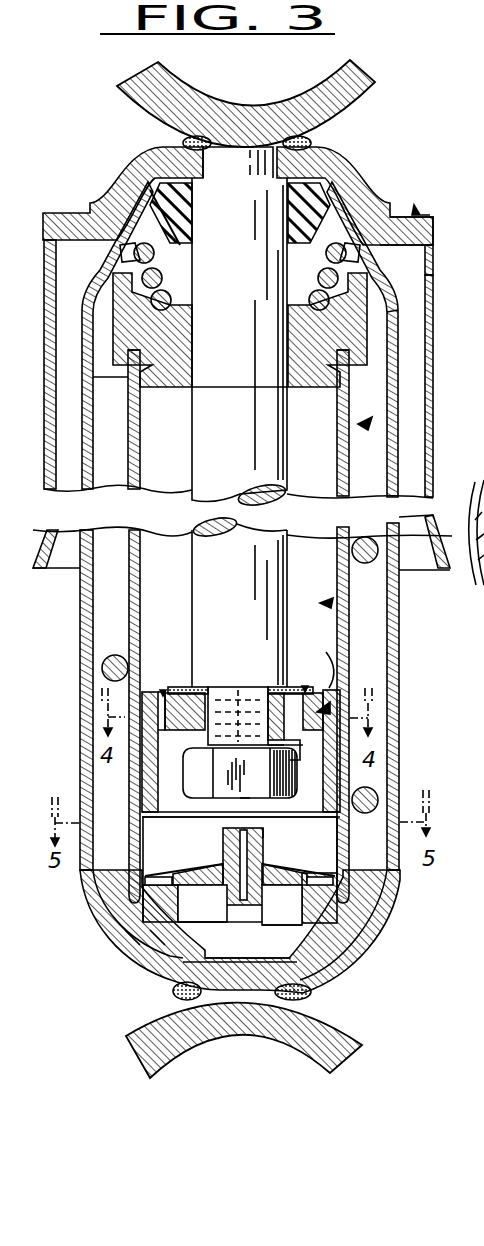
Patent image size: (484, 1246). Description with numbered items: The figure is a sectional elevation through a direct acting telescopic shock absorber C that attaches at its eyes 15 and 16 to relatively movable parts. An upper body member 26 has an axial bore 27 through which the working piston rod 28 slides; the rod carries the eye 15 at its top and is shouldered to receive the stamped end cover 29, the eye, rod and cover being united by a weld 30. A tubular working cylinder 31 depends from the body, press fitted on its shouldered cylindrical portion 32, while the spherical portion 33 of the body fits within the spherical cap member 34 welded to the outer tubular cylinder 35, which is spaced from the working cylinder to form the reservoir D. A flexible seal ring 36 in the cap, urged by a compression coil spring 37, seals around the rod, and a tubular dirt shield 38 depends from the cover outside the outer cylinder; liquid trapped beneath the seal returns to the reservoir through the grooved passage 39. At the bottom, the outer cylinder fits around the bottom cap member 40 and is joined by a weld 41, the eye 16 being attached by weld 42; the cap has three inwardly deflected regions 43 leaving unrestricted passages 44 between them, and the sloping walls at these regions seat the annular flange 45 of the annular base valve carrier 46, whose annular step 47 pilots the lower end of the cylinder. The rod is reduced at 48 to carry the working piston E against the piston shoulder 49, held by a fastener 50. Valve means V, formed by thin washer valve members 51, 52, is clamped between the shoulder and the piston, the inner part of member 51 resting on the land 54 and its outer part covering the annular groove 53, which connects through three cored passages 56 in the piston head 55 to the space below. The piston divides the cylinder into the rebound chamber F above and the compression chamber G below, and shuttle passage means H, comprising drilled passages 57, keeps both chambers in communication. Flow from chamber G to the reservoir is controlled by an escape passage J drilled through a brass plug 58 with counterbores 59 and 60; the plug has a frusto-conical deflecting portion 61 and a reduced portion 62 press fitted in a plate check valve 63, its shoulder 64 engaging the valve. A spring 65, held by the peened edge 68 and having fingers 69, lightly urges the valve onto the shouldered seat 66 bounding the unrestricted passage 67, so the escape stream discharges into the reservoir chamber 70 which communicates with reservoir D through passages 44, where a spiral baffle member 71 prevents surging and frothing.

The eye 15 is at (368, 97).
The eye 16 is at (127, 1037).
The upper body member 26 is at (360, 306).
The axial bore 27 is at (284, 318).
The working piston rod 28 is at (198, 423).
The stamped end cover 29 is at (125, 173).
The weld 30 is at (318, 142).
The tubular working cylinder 31 is at (345, 468).
The shouldered cylindrical portion 32 is at (345, 370).
The spherical portion 33 is at (402, 326).
The spherical cap member 34 is at (433, 262).
The outer tubular cylinder 35 is at (397, 444).
The seal ring 36 is at (360, 187).
The compression coil spring 37 is at (398, 228).
The tubular dirt shield 38 is at (434, 357).
The grooved passage 39 is at (97, 273).
The bottom cap member 40 is at (84, 877).
The weld 41 is at (88, 895).
The weld 42 is at (172, 993).
The regions of inward deflection 43 is at (172, 968).
The passages 44 is at (337, 931).
The annular flange 45 is at (150, 947).
The annular base valve carrier 46 is at (140, 915).
The annular step 47 is at (110, 920).
The reduced rod end 48 is at (260, 688).
The piston shoulder 49 is at (150, 792).
The fastener 50 is at (215, 787).
The valve member 51 is at (241, 753).
The valve member 52 is at (176, 688).
The annular groove 53 is at (183, 690).
The land 54 is at (205, 690).
The piston head 55 is at (280, 686).
The cored liquid conducting passages 56 is at (230, 684).
The shuttle passages 57 is at (305, 687).
The brass plug 58 is at (226, 900).
The counterbore 59 is at (245, 822).
The counterbore 60 is at (266, 929).
The frusto-conical portion 61 is at (240, 845).
The reduced diameter portion 62 is at (234, 866).
The plate check valve 63 is at (268, 866).
The plug shoulder 64 is at (282, 913).
The spring 65 is at (172, 858).
The shouldered seat 66 is at (282, 905).
The unrestricted passage 67 is at (183, 927).
The peened edge 68 is at (175, 876).
The spring fingers 69 is at (202, 902).
The reservoir chamber 70 is at (290, 955).
The spiral baffle member 71 is at (103, 666).
The shock absorber C is at (414, 213).
The reservoir D is at (364, 426).
The working piston E is at (322, 710).
The rebound chamber F is at (325, 603).
The compression chamber G is at (398, 872).
The shuttle passage means H is at (163, 690).
The escape passage J is at (264, 838).
The valve means V is at (325, 670).